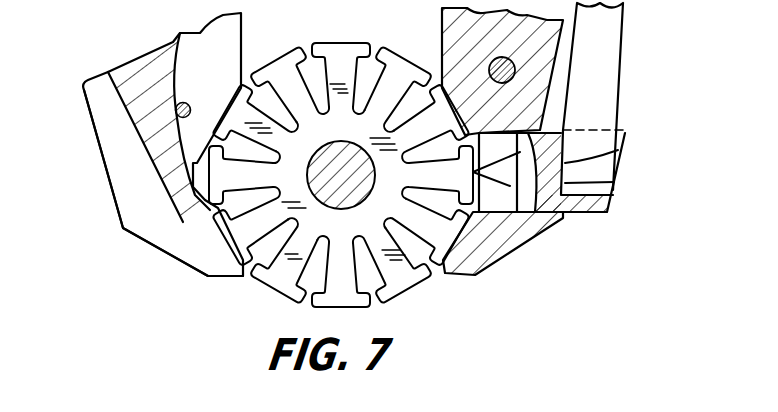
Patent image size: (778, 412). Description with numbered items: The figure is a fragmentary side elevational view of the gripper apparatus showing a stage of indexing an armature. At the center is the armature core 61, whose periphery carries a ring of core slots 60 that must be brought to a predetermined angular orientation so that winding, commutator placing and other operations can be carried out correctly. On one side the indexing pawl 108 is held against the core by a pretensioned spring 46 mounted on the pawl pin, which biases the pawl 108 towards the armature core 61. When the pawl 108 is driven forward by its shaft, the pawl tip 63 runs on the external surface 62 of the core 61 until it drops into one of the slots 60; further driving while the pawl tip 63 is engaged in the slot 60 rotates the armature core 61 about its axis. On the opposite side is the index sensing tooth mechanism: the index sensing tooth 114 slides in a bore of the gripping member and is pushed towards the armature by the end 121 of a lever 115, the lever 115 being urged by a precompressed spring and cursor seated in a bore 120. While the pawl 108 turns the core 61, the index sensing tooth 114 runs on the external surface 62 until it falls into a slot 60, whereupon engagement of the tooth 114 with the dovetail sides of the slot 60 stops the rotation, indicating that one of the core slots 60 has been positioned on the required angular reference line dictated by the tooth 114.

The pretensioned spring 46 is at (145, 62).
The core slots 60 is at (341, 165).
The armature core 61 is at (400, 282).
The external surface 62 is at (280, 290).
The pawl tip 63 is at (220, 212).
The indexing pawl 108 is at (157, 135).
The index sensing tooth 114 is at (528, 232).
The lever 115 is at (621, 33).
The bore 120 is at (502, 173).
The end of lever 121 is at (613, 153).